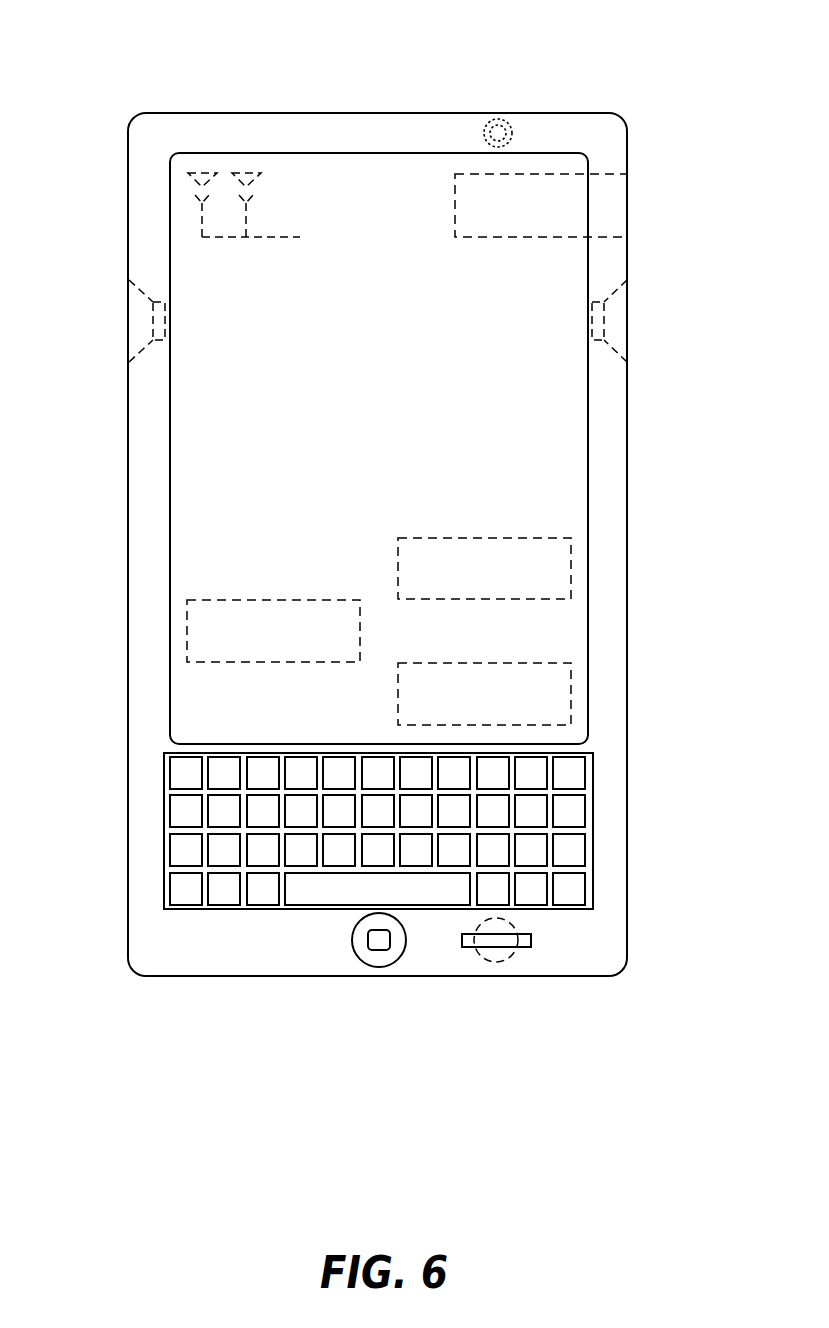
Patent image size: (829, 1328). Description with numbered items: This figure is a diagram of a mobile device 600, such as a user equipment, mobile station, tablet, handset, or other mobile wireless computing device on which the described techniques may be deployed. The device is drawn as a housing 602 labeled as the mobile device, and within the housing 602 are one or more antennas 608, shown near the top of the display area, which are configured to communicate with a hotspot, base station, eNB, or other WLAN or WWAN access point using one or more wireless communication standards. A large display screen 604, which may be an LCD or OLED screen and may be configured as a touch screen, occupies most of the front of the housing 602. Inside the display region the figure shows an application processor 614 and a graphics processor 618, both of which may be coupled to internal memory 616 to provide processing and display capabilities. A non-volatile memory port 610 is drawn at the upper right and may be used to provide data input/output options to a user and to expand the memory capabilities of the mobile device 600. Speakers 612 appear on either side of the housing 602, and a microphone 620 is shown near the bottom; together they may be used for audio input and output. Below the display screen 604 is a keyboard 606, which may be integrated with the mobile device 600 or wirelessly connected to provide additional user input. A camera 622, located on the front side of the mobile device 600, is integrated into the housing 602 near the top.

The mobile device 600 is at (643, 34).
The housing 602 is at (378, 112).
The display screen 604 is at (565, 440).
The keyboard 606 is at (595, 832).
The antennas 608 is at (245, 170).
The non-volatile memory port 610 is at (628, 206).
The speakers 612 is at (140, 320).
The application processor 614 is at (482, 536).
The internal memory 616 is at (482, 663).
The graphics processor 618 is at (272, 600).
The microphone 620 is at (498, 962).
The camera 622 is at (504, 122).